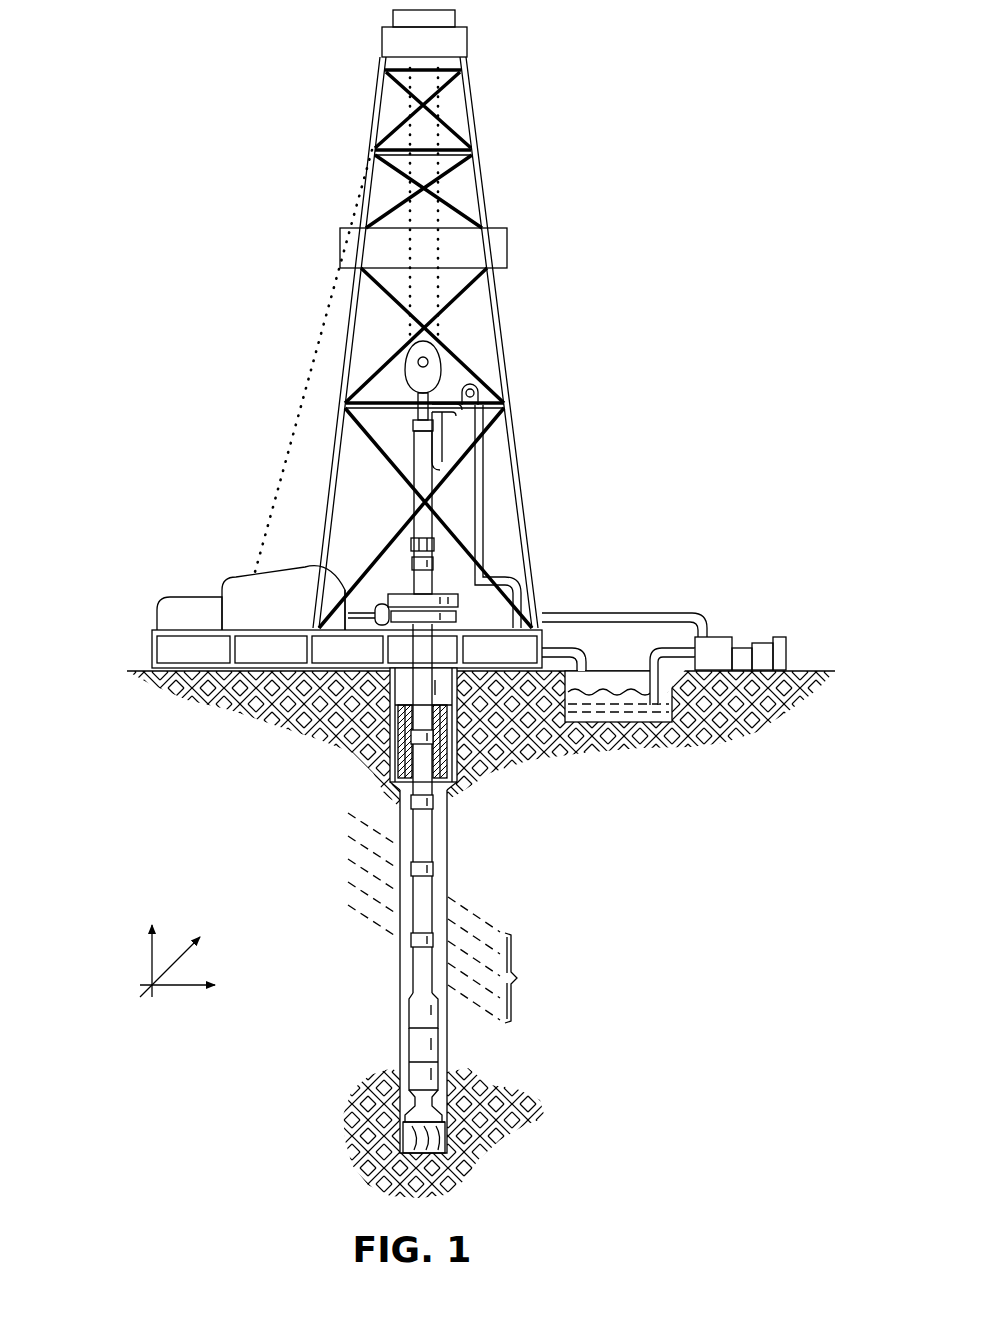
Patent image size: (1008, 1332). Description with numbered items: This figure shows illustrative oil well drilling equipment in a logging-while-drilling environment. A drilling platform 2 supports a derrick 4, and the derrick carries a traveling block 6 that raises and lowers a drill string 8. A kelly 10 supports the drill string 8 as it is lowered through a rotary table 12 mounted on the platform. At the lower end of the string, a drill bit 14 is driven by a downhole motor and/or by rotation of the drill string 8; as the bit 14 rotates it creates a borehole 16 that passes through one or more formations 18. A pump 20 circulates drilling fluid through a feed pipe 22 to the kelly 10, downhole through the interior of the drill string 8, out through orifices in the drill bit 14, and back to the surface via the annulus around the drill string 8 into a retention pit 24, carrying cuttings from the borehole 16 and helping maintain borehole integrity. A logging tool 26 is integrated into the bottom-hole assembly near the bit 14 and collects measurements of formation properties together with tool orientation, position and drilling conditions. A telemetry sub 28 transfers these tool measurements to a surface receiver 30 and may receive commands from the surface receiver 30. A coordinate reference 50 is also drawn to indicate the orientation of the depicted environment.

The drilling platform 2 is at (152, 648).
The derrick 4 is at (484, 136).
The traveling block 6 is at (440, 370).
The drill string 8 is at (432, 833).
The kelly 10 is at (413, 443).
The rotary table 12 is at (402, 593).
The drill bit 14 is at (447, 1125).
The borehole 16 is at (448, 855).
The formations 18 is at (453, 918).
The pump 20 is at (720, 637).
The feed pipe 22 is at (612, 613).
The retention pit 24 is at (603, 697).
The logging tool 26 is at (409, 1048).
The telemetry sub 28 is at (409, 1012).
The surface receiver 30 is at (434, 545).
The coordinate system 50 is at (150, 956).